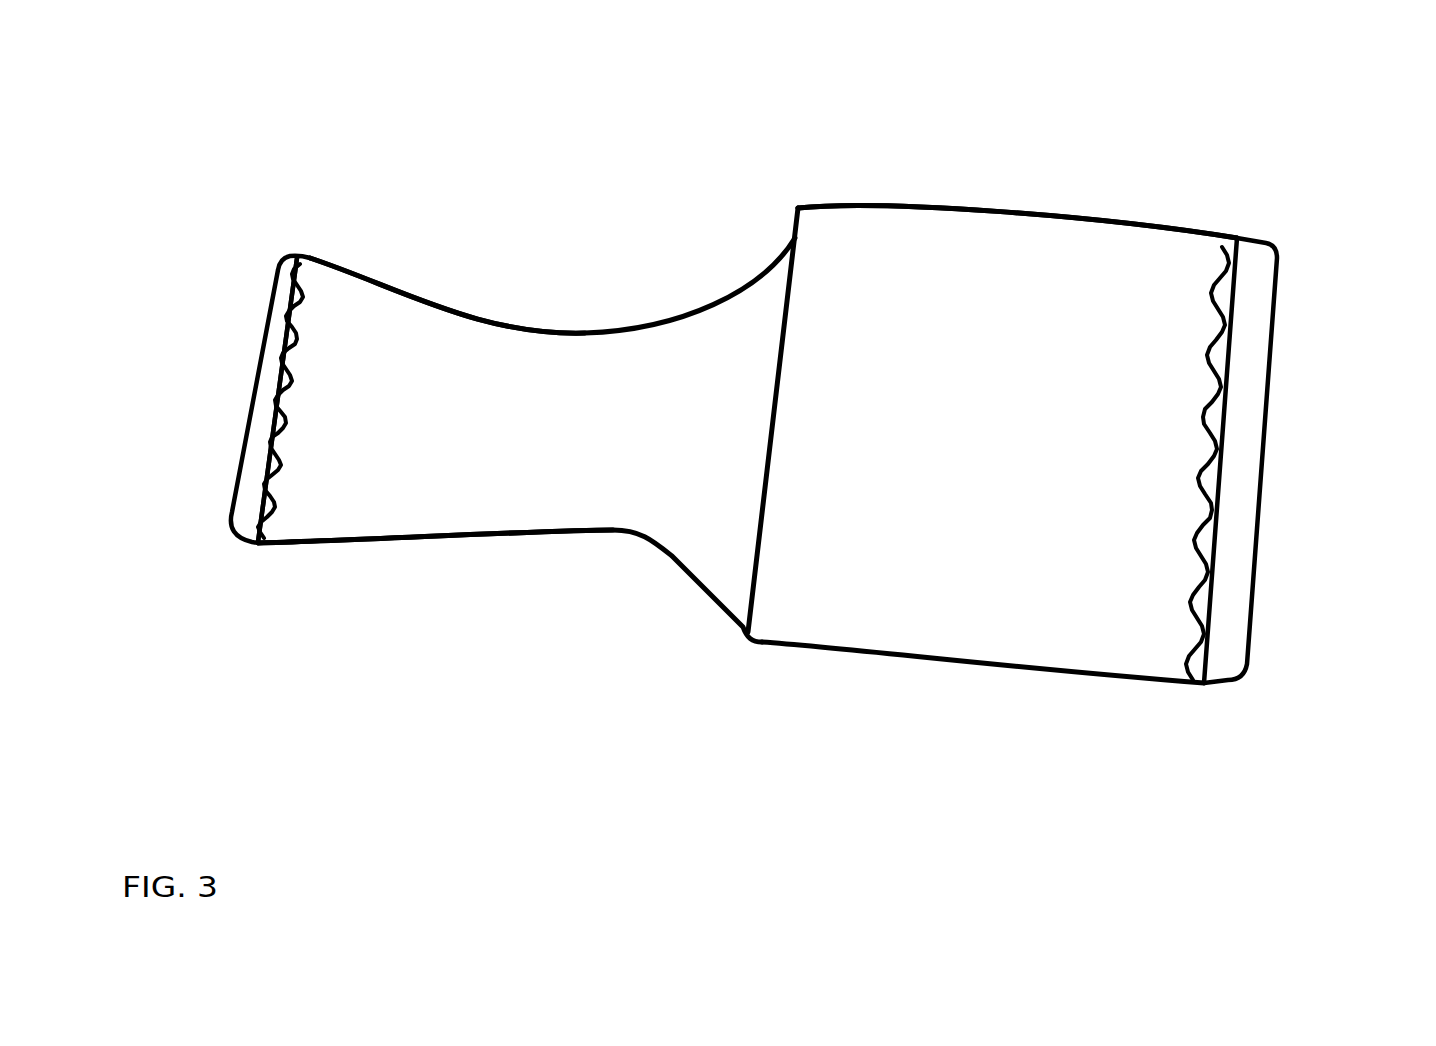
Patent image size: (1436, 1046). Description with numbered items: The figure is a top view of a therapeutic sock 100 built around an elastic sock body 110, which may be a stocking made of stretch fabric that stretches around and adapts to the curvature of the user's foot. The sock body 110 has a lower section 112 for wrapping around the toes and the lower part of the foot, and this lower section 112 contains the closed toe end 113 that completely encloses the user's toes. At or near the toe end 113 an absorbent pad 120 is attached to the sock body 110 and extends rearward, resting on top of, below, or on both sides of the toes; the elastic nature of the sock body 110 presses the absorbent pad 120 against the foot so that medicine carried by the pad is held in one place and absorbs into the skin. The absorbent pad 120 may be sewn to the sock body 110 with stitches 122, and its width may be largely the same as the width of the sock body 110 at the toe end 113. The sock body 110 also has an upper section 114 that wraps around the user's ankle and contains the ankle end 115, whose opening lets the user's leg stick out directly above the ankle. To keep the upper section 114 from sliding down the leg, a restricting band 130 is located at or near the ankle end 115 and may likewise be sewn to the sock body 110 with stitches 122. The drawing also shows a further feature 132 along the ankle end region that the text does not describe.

The therapeutic sock 100 is at (183, 146).
The sock body 110 is at (575, 435).
The lower section 112 is at (707, 700).
The toe end 113 is at (1279, 440).
The upper section 114 is at (207, 552).
The ankle end 115 is at (226, 398).
The absorbent pad 120 is at (898, 260).
The stitches 122 is at (1218, 270).
The restricting band 130 is at (285, 278).
The neck elastic 132 is at (307, 285).